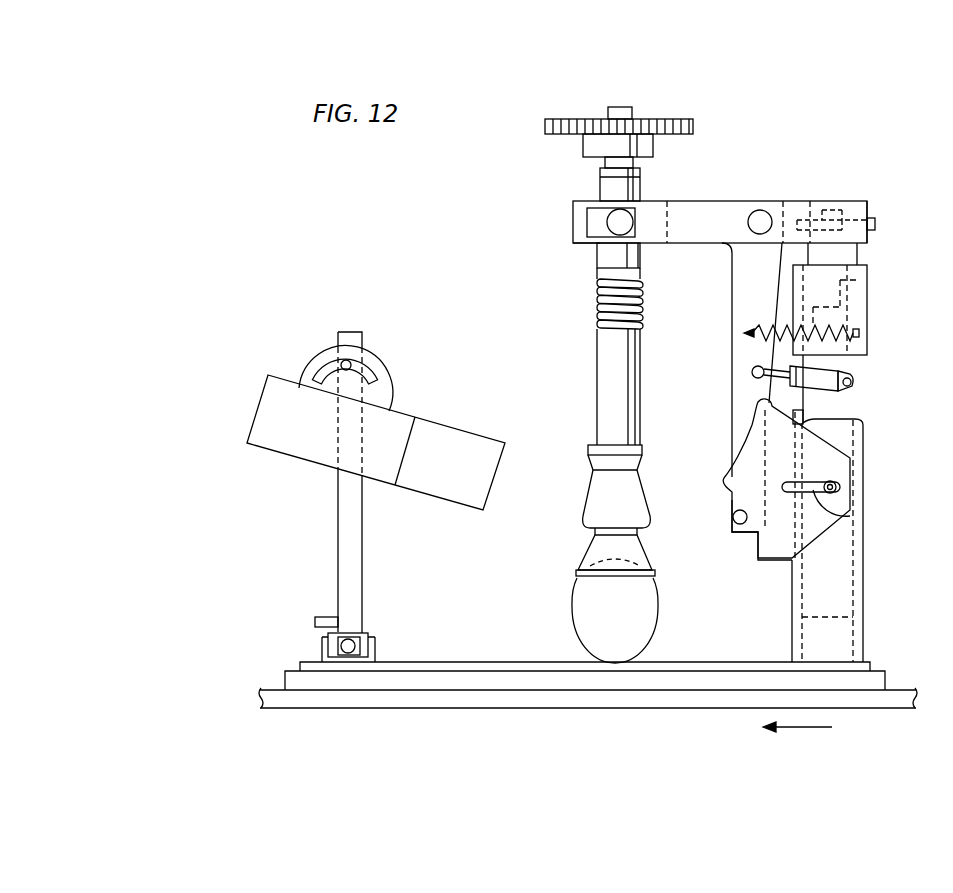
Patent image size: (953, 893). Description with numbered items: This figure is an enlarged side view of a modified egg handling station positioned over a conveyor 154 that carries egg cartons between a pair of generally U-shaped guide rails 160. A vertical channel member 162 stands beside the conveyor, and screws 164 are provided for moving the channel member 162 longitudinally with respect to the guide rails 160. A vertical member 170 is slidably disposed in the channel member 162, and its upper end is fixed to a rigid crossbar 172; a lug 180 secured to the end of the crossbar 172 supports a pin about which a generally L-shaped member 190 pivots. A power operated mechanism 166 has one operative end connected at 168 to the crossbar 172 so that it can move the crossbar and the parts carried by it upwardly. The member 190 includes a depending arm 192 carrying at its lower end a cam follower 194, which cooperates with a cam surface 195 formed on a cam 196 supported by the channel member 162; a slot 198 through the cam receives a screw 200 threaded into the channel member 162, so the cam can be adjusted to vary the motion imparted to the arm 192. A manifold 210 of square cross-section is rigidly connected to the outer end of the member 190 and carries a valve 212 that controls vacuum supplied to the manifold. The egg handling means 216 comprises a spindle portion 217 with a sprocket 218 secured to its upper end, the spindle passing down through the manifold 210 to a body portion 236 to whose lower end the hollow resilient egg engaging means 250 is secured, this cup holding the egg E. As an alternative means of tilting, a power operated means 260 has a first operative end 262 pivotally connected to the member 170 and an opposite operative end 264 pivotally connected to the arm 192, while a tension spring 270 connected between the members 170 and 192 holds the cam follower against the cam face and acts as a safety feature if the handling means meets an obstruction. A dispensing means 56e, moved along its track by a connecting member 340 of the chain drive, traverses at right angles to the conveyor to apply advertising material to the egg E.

The spindle portion 217 is at (633, 107).
The sprocket 218 is at (568, 119).
The members 190 is at (687, 206).
The cams 196 is at (760, 210).
The lug 180 is at (793, 203).
The crossbar 172 is at (866, 201).
The connection 168 is at (876, 224).
The vertical members 170 is at (852, 256).
The power operated mechanism 166 is at (866, 289).
The valve 212 is at (590, 218).
The manifold 210 is at (573, 243).
The egg handling means 216 is at (548, 323).
The body portion 236 is at (600, 367).
The tension spring 270 is at (760, 325).
The operative end 264 is at (760, 371).
The power operated means 260 is at (852, 375).
The first operative end 262 is at (851, 386).
The depending arms 192 is at (730, 390).
The cam surfaces 195 is at (732, 442).
The egg engaging means 250 is at (586, 528).
The screw 200 is at (840, 486).
The slot 198 is at (850, 512).
The cam followers 194 is at (735, 540).
The vertical channel members 162 is at (838, 562).
The screws 164 is at (870, 664).
The guide rails 160 is at (885, 690).
The conveyor 154 is at (273, 690).
The connecting member 340 is at (322, 618).
The dispensing means 56e is at (288, 344).
The egg E is at (578, 621).